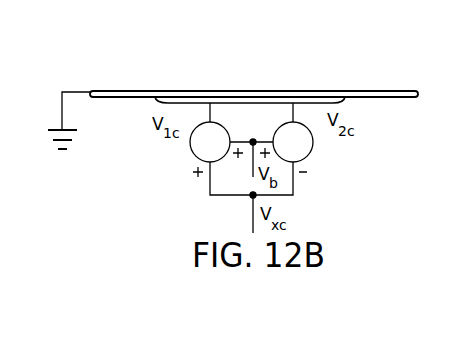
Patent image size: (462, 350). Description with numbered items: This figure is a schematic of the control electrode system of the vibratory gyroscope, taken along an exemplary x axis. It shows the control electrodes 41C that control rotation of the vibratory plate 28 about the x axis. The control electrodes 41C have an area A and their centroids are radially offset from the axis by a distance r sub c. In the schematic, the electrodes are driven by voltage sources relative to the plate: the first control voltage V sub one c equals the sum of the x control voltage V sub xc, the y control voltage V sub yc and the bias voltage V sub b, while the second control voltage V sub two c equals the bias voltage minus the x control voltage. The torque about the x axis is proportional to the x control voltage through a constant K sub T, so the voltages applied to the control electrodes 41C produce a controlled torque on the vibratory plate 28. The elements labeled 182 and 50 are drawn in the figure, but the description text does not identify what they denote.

The control electrode 41C is at (156, 97).
The vibratory plate 28 is at (244, 91).
The capacitive sensor 182 is at (270, 82).
The substrate 50 is at (387, 98).